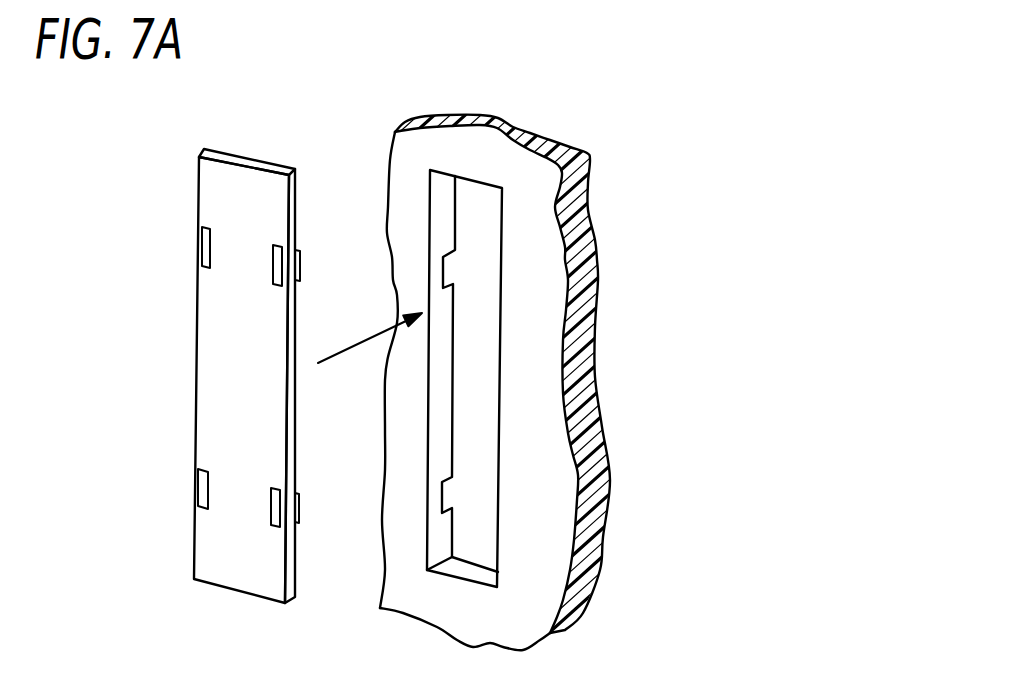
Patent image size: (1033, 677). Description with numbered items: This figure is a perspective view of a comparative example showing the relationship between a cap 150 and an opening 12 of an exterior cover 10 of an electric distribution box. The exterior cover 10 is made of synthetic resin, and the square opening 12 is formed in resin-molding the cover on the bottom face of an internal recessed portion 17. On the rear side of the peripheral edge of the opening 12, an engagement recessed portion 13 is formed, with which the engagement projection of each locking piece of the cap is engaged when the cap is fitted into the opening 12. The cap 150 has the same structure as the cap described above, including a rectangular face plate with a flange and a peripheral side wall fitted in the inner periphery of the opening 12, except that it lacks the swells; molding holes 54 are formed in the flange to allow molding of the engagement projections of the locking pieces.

The exterior cover 10 is at (436, 338).
The opening 12 is at (506, 410).
The engagement recessed portion 13 is at (445, 499).
The internal recessed portion 17 is at (552, 548).
The cap 150 is at (187, 376).
The molding hole 54 is at (197, 498).